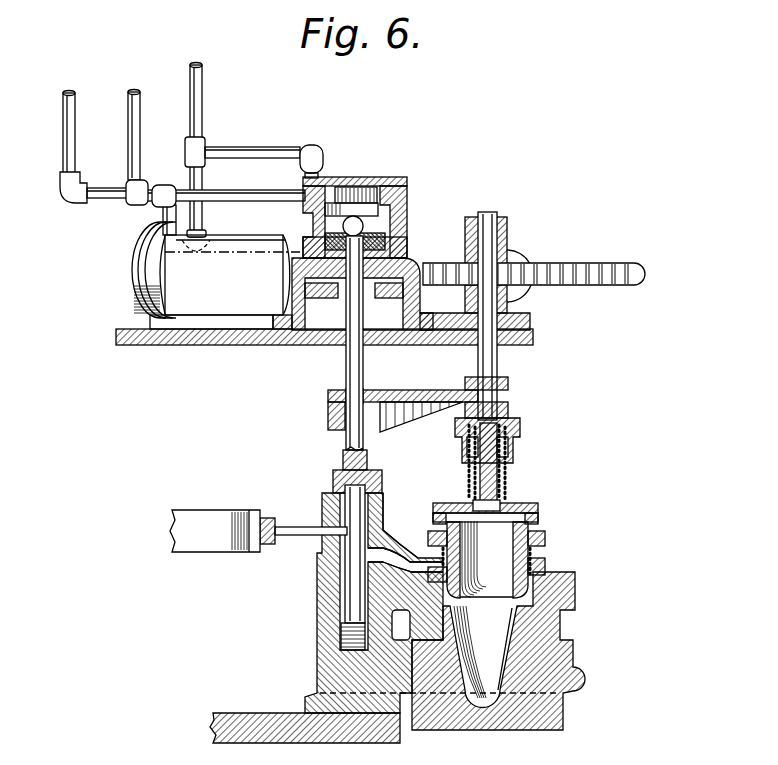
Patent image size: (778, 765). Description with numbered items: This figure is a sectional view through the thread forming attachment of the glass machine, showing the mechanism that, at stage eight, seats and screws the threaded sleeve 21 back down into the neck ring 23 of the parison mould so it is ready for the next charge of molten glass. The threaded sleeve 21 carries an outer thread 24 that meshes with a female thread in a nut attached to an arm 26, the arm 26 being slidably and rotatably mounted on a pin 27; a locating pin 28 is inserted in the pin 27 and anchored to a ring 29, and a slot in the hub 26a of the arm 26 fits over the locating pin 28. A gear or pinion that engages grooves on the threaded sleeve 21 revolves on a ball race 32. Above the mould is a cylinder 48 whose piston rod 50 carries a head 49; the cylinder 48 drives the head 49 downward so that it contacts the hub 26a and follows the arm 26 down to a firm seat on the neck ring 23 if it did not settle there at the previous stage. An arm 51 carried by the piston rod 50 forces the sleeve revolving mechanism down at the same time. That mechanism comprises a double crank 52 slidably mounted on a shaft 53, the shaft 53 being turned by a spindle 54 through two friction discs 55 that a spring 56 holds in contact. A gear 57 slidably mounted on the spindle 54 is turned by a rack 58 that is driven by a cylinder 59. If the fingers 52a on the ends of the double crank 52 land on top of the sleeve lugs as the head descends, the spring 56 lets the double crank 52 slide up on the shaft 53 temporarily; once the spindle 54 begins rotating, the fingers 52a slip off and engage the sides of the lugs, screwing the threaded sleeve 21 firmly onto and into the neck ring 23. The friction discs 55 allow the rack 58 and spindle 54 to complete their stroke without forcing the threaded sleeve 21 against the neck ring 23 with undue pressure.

The threaded sleeve 21 is at (535, 507).
The neck ring 23 is at (563, 588).
The thread 24 is at (548, 560).
The arm 26 is at (424, 540).
The hub of arm 26a is at (386, 495).
The pin 27 is at (352, 540).
The locating pin 28 is at (294, 525).
The ring 29 is at (190, 520).
The ball race 32 is at (540, 543).
The cylinder 48 is at (398, 224).
The head 49 is at (334, 470).
The piston rod 50 is at (353, 363).
The arm 51 is at (414, 392).
The double crank 52 is at (527, 503).
The fingers 52a is at (538, 516).
The shaft 53 is at (520, 505).
The spindle 54 is at (486, 364).
The friction discs 55 is at (503, 470).
The spring 56 is at (508, 430).
The pinion 57 is at (505, 270).
The rack pinion 58 is at (608, 270).
The cylinder 59 is at (215, 288).